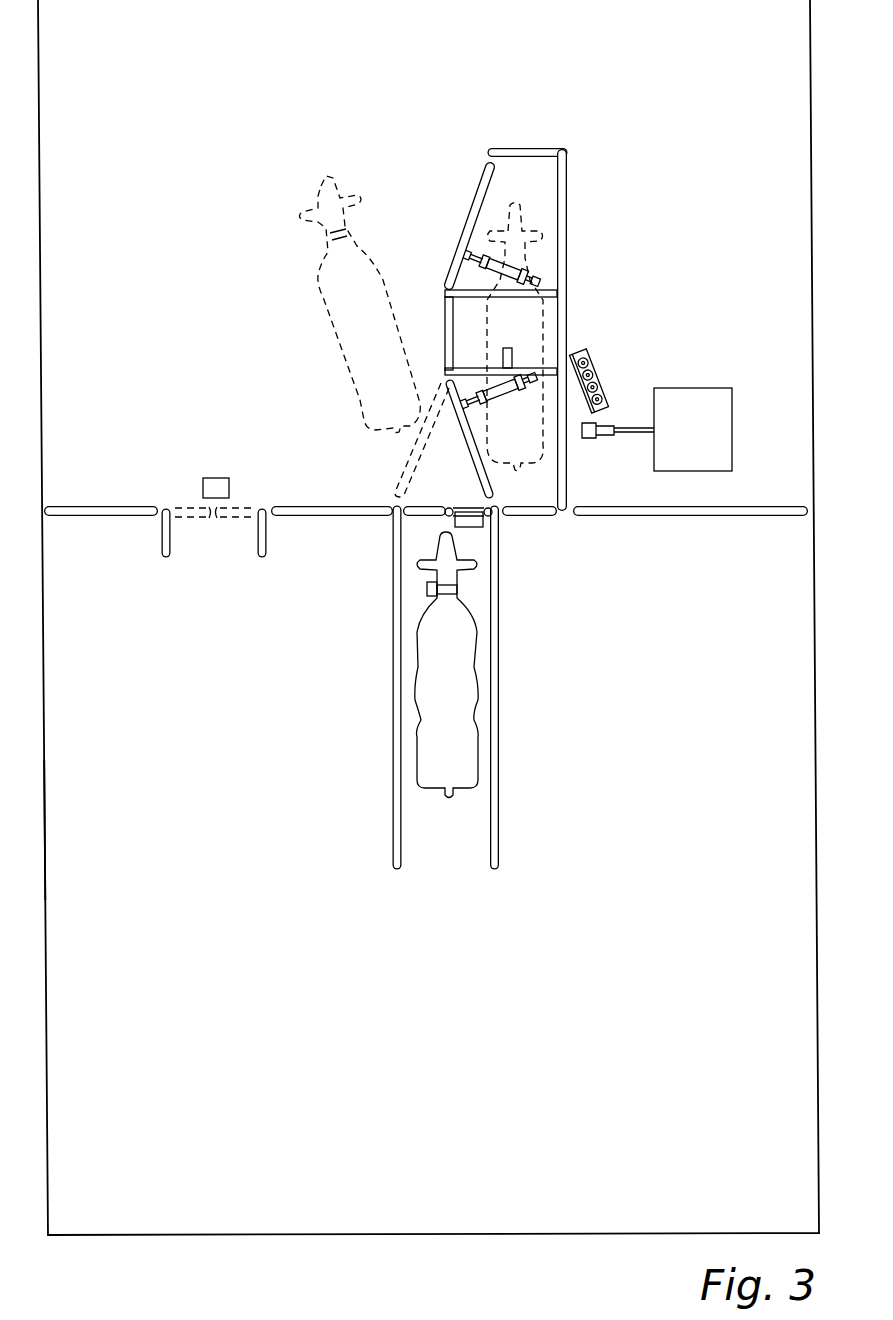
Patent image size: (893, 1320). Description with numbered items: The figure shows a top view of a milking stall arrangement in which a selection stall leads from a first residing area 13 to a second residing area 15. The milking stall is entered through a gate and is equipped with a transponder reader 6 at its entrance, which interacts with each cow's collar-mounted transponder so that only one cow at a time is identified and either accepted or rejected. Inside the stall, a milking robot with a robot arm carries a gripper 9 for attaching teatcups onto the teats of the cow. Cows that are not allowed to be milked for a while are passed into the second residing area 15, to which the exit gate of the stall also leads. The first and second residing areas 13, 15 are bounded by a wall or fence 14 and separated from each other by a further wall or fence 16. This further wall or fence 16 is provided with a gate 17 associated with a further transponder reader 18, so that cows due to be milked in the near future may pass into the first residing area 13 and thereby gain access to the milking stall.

The transponder reader 6 is at (470, 527).
The gripper 9 is at (40, 222).
The first residing area 13 is at (342, 996).
The wall or fence 14 is at (45, 830).
The second residing area 15 is at (346, 121).
The further wall or fence 16 is at (747, 505).
The gate 17 is at (217, 556).
The further transponder reader 18 is at (220, 478).